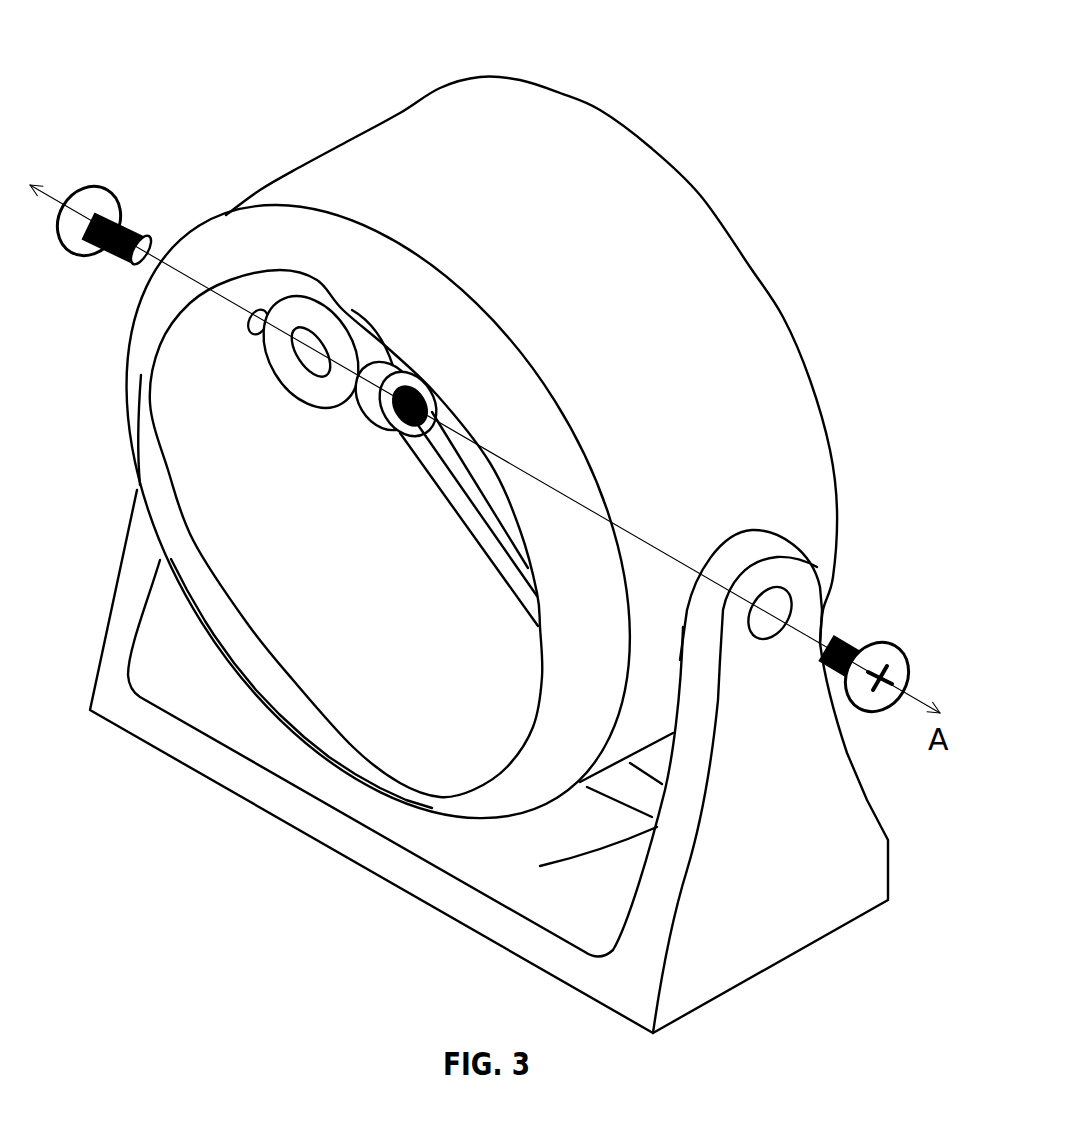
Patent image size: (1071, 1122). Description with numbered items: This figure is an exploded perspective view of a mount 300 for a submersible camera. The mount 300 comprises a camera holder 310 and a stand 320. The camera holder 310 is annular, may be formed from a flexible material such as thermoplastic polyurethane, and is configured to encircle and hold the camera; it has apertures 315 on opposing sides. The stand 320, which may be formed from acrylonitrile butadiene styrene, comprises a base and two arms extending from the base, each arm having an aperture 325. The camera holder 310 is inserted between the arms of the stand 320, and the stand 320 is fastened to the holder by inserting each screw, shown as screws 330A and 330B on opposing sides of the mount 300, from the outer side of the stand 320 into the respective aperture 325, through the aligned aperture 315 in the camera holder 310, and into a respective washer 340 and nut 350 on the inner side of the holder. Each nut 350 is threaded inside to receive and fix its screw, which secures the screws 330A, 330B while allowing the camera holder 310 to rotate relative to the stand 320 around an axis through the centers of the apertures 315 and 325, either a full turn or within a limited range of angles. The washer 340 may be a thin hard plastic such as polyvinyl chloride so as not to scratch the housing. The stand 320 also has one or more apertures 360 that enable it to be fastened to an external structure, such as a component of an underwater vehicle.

The mount 300 is at (722, 92).
The camera holder 310 is at (205, 222).
The aperture 315 is at (257, 310).
The stand 320 is at (768, 557).
The aperture 325 is at (767, 620).
The screw 330A is at (88, 185).
The screw 330B is at (890, 640).
The washer 340 is at (305, 298).
The nut 350 is at (405, 376).
The aperture 360 is at (633, 860).